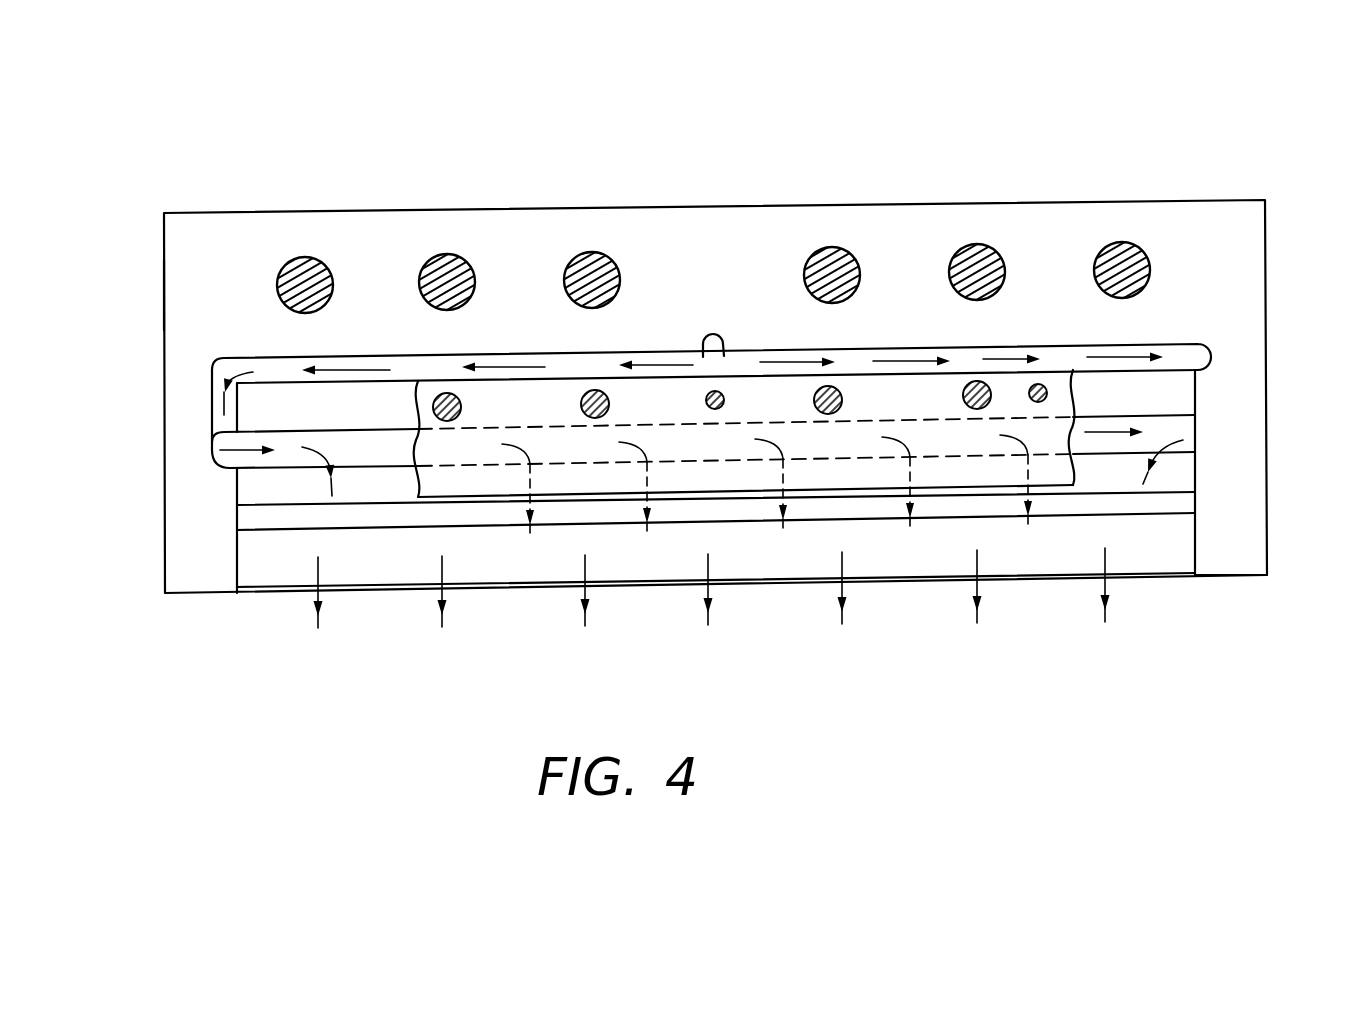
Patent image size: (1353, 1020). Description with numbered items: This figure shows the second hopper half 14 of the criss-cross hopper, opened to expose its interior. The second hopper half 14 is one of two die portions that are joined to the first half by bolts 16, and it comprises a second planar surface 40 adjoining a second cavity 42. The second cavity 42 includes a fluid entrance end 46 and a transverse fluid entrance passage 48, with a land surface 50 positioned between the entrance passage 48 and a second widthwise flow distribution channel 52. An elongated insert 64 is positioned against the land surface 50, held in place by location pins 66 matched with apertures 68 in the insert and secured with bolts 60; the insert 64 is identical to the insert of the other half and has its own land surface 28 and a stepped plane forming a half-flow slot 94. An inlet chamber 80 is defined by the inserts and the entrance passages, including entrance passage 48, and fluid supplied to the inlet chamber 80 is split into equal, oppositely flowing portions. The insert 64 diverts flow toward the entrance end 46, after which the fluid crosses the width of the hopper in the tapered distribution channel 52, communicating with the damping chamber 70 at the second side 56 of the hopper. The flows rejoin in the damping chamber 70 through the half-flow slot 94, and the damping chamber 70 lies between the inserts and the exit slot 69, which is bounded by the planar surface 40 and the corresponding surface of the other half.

The second hopper half 14 is at (1281, 88).
The bolts 16 is at (426, 262).
The land surface 28 is at (285, 419).
The second planar surface 40 is at (1243, 452).
The second cavity 42 is at (1195, 410).
The fluid entrance end 46 is at (270, 368).
The transverse fluid entrance passage 48 is at (745, 358).
The land surface 50 is at (1178, 393).
The second widthwise flow distribution channel 52 is at (164, 293).
The second side 56 is at (1268, 528).
The bolts 60 is at (581, 404).
The elongated insert 64 is at (474, 484).
The location pins 66 is at (721, 394).
The apertures 68 is at (708, 403).
The exit slot 69 is at (1143, 548).
The damping chamber 70 is at (860, 506).
The inlet chamber 80 is at (610, 352).
The half-flow slot 94 is at (256, 493).